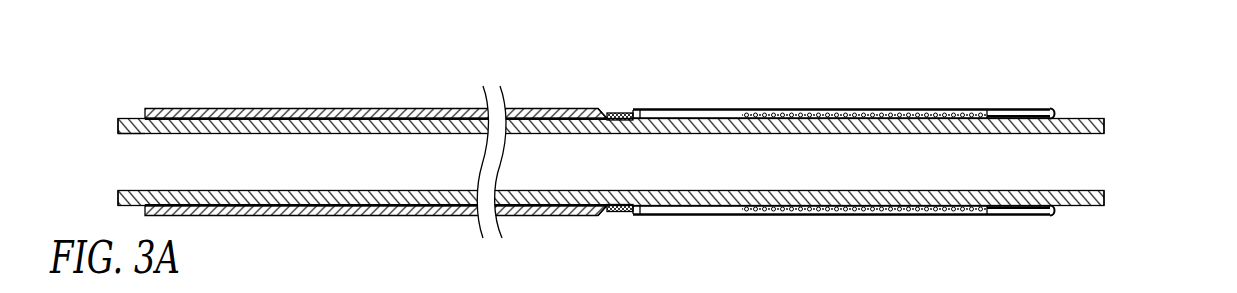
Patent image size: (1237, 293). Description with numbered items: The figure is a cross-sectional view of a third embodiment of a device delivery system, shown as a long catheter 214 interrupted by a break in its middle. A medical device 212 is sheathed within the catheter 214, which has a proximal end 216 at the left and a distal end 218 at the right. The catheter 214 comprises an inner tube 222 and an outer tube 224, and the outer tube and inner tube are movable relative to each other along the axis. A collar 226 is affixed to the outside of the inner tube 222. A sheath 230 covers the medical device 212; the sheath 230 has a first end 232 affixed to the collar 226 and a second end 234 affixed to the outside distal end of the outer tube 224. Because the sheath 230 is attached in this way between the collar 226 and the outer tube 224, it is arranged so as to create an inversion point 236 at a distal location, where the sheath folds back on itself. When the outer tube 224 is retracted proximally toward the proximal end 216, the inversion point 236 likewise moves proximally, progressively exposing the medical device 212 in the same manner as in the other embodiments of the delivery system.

The medical device 212 is at (750, 217).
The catheter 214 is at (422, 97).
The proximal end 216 is at (125, 166).
The distal end 218 is at (1103, 167).
The inner tube 222 is at (128, 119).
The outer tube 224 is at (238, 108).
The collar 226 is at (612, 113).
The sheath 230 is at (712, 110).
The first end 232 is at (627, 114).
The second end 234 is at (598, 108).
The inversion point 236 is at (1053, 108).